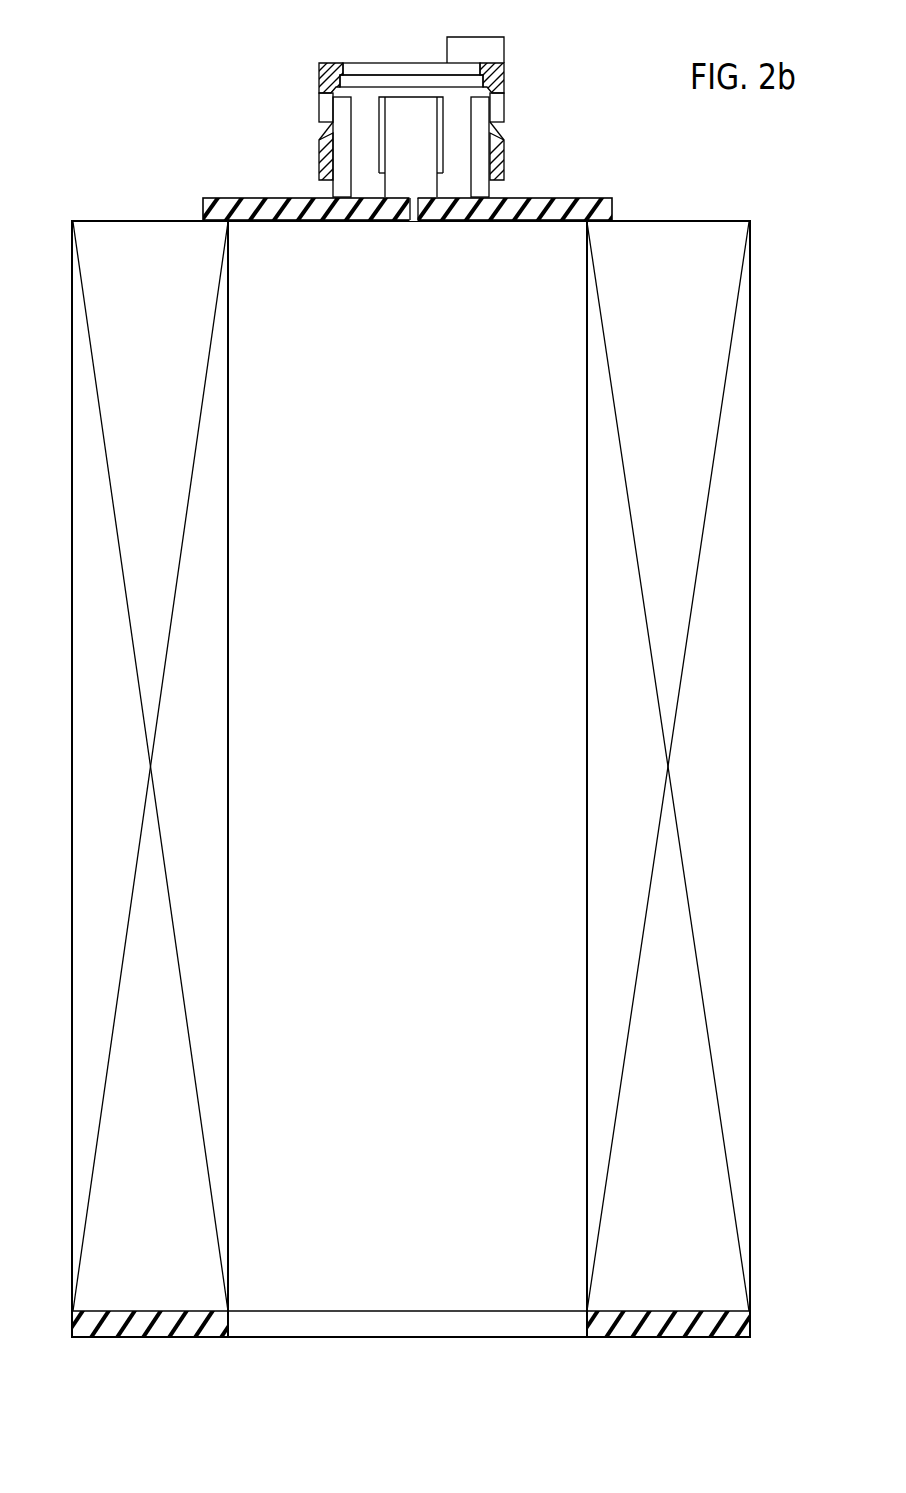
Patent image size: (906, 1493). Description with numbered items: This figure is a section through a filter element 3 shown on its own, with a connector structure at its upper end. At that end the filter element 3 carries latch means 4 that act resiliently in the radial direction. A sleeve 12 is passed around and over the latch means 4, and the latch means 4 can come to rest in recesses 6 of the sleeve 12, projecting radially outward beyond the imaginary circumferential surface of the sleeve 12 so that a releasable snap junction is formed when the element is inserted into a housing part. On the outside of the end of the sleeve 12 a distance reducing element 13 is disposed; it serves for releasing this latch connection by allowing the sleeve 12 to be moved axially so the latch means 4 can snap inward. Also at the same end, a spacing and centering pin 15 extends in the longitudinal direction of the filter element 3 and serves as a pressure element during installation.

The filter element 3 is at (733, 460).
The latch means 4 is at (323, 137).
The recesses 6 is at (320, 104).
The sleeve 12 is at (334, 61).
The distance reducing element 13 is at (500, 48).
The spacing and centering pin 15 is at (403, 107).